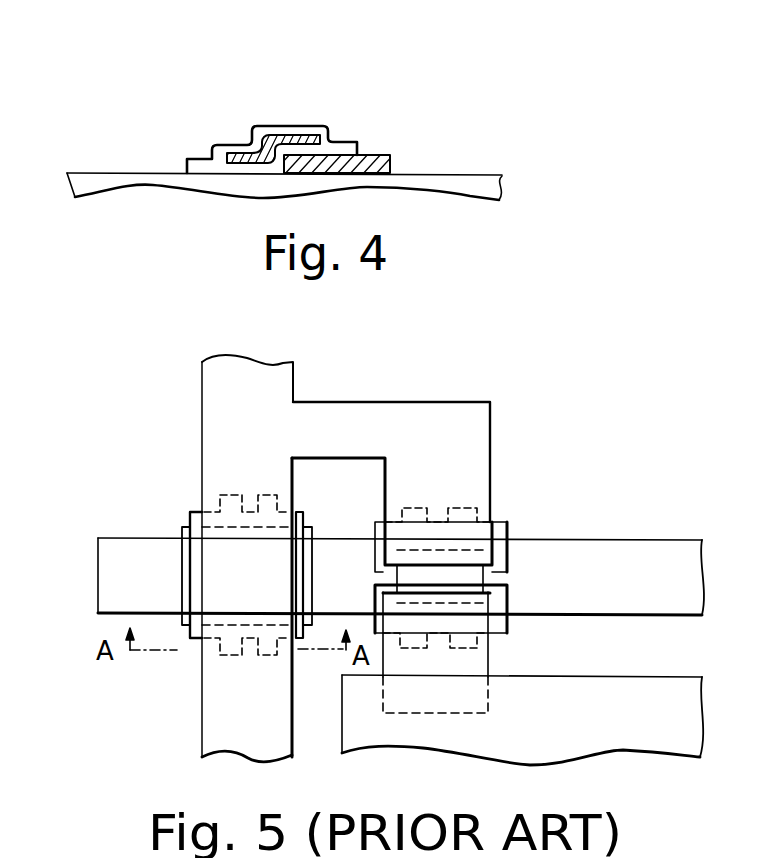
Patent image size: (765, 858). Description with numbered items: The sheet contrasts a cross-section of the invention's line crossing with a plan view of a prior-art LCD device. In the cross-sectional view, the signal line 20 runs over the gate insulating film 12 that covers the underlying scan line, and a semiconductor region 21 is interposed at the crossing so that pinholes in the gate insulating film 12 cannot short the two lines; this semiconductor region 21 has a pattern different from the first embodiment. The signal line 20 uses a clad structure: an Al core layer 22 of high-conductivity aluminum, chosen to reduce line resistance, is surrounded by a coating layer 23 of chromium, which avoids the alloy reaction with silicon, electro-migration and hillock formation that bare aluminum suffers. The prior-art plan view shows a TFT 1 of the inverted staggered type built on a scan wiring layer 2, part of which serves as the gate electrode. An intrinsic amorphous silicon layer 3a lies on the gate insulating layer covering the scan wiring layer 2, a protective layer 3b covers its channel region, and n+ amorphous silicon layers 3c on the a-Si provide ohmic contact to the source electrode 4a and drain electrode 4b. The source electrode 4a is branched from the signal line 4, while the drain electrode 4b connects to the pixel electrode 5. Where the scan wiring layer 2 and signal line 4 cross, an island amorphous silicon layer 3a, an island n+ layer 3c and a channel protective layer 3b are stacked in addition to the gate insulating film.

In FIG. 4, the gate insulating film 12 is at (503, 182).
In FIG. 4, the signal line 20 is at (391, 73).
In FIG. 4, the semiconductor region 21 is at (393, 164).
In FIG. 4, the Al core layer 22 is at (305, 135).
In FIG. 4, the coating layer 23 is at (335, 147).
In FIG. 5, the TFT 1 is at (540, 465).
In FIG. 5, the scan wiring layer 2 is at (650, 552).
In FIG. 5, the intrinsic amorphous silicon layer 3a is at (365, 541).
In FIG. 5, the protective layer 3b is at (307, 528).
In FIG. 5, the n+ amorphous silicon layers 3c is at (200, 513).
In FIG. 5, the signal line 4 is at (218, 430).
In FIG. 5, the source electrode 4a is at (470, 425).
In FIG. 5, the drain electrode 4b is at (478, 657).
In FIG. 5, the pixel electrode 5 is at (648, 685).